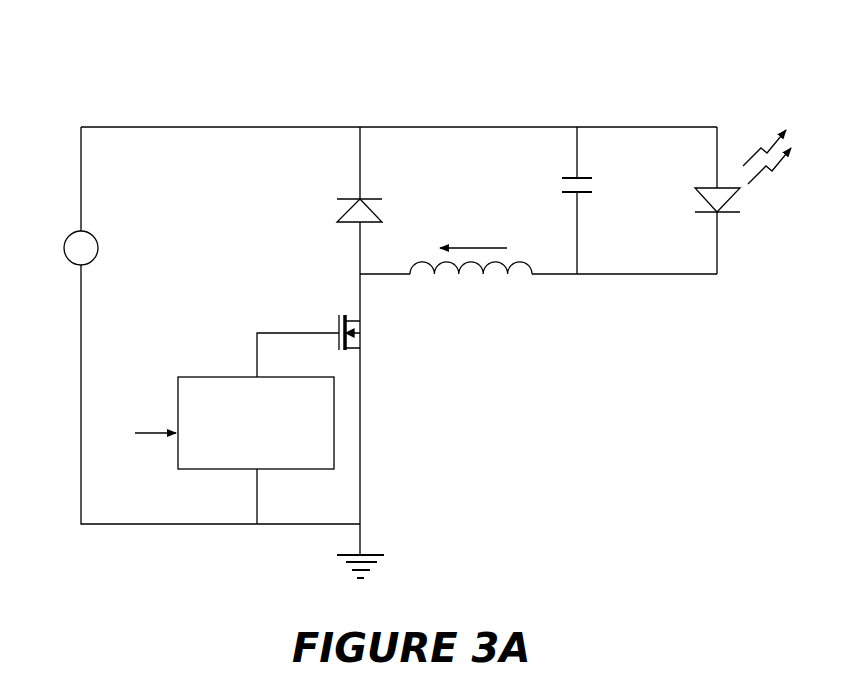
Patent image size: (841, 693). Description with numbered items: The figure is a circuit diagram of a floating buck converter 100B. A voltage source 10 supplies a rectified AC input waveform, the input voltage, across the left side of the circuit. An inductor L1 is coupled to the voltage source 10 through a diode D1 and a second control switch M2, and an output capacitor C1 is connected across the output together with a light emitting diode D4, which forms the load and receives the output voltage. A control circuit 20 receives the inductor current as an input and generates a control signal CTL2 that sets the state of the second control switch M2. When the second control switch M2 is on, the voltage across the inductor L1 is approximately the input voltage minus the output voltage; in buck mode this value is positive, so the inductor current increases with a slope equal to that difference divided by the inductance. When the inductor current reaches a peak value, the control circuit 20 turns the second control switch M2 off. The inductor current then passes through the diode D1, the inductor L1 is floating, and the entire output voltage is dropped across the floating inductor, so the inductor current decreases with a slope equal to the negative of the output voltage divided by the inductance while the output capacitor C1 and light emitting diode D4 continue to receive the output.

The floating buck converter 100B is at (683, 90).
The voltage source 10 is at (65, 244).
The control circuit 20 is at (225, 450).
The diode D1 is at (342, 211).
The inductor L1 is at (459, 265).
The output capacitor C1 is at (587, 194).
The light emitting diode D4 is at (743, 171).
The second control switch M2 is at (371, 333).
The control signal CTL2 is at (298, 341).